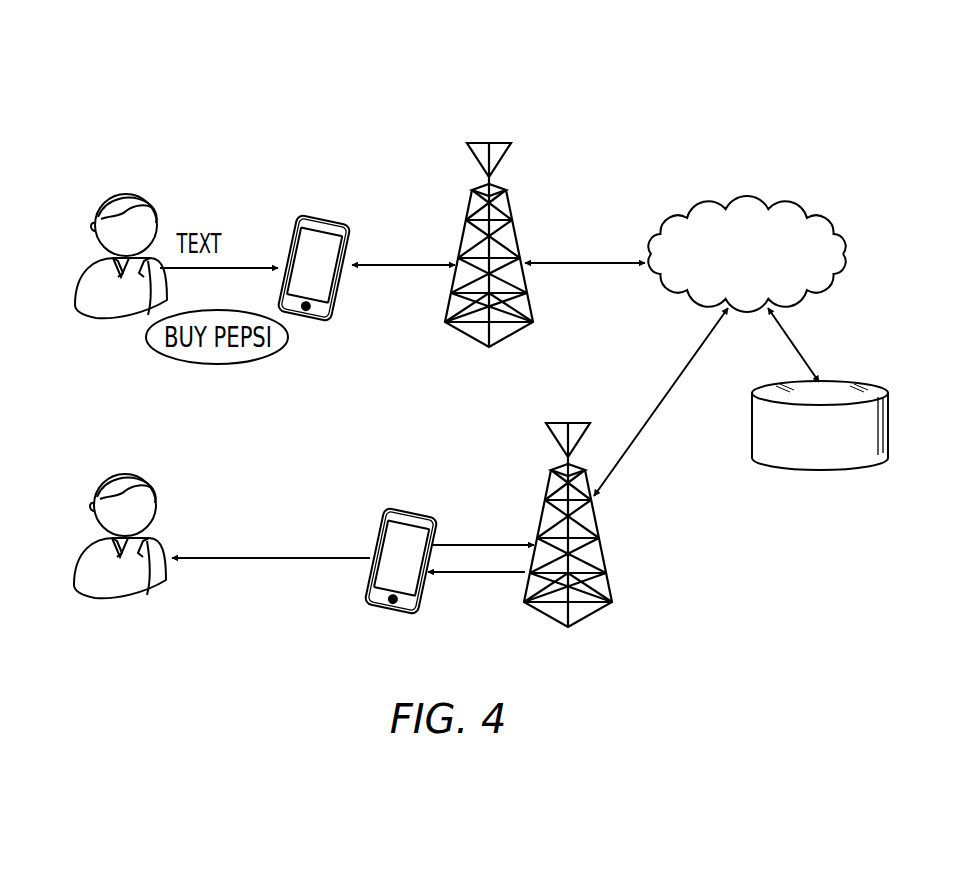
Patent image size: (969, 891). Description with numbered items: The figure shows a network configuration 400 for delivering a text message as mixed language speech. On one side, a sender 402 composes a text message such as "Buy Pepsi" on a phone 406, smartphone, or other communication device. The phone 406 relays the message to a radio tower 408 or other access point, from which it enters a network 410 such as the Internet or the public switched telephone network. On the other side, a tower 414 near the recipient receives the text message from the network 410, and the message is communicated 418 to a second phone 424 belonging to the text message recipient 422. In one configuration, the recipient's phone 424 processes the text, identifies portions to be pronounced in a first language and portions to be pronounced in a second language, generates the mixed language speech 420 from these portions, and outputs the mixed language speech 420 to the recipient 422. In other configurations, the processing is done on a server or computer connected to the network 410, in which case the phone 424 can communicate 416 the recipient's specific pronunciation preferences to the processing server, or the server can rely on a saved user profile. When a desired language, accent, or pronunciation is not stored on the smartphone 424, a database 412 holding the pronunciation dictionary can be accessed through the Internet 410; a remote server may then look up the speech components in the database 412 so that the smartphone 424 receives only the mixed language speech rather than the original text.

The network configuration 400 is at (400, 100).
The sender 402 is at (93, 222).
The phone 406 is at (326, 215).
The radio tower 408 is at (508, 205).
The network 410 is at (749, 202).
The database 412 is at (815, 475).
The tower 414 is at (615, 580).
The communication of pronunciation preferences 416 is at (477, 540).
The communication of text message 418 is at (477, 580).
The mixed language speech 420 is at (266, 508).
The recipient 422 is at (92, 502).
The second phone 424 is at (414, 508).